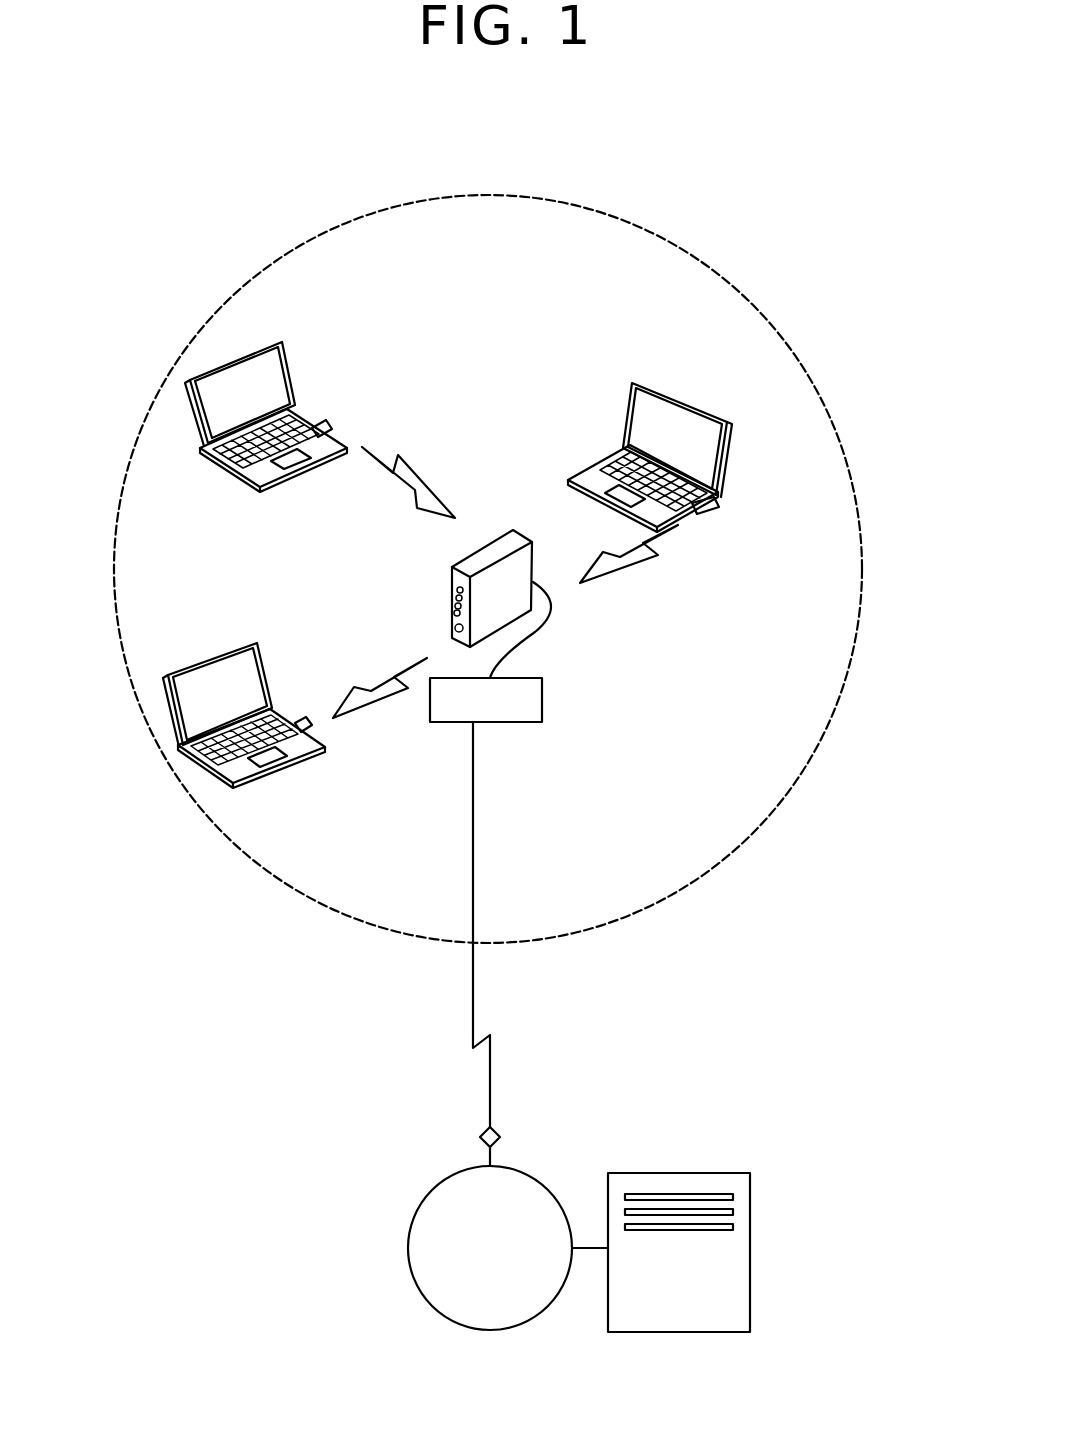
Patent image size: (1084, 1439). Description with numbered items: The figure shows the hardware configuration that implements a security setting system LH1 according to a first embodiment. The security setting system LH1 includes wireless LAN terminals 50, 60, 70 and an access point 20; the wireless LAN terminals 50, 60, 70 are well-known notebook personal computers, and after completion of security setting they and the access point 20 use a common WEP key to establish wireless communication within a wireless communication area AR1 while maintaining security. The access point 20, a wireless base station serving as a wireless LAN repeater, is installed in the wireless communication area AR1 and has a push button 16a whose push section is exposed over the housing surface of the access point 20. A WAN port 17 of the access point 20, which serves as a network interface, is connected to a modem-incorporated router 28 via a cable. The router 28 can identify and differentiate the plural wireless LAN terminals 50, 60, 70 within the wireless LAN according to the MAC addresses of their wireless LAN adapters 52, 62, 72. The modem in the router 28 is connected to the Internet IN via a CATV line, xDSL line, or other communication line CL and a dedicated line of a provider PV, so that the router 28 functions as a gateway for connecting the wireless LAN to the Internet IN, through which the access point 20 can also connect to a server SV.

The wireless LAN terminal 60 is at (285, 353).
The wireless LAN adapter 62 is at (331, 425).
The wireless LAN terminal 70 is at (266, 660).
The wireless LAN adapter 72 is at (312, 727).
The wireless LAN terminal 50 is at (724, 460).
The wireless LAN adapter 52 is at (716, 508).
The push button 16a is at (450, 593).
The access point 20 is at (452, 633).
The WAN port 17 is at (534, 582).
The router 28 is at (545, 698).
The wireless communication area AR1 is at (735, 297).
The security setting system LH1 is at (696, 206).
The communication line CL is at (473, 1003).
The provider PV is at (482, 1129).
The Internet IN is at (408, 1248).
The server SV is at (748, 1270).